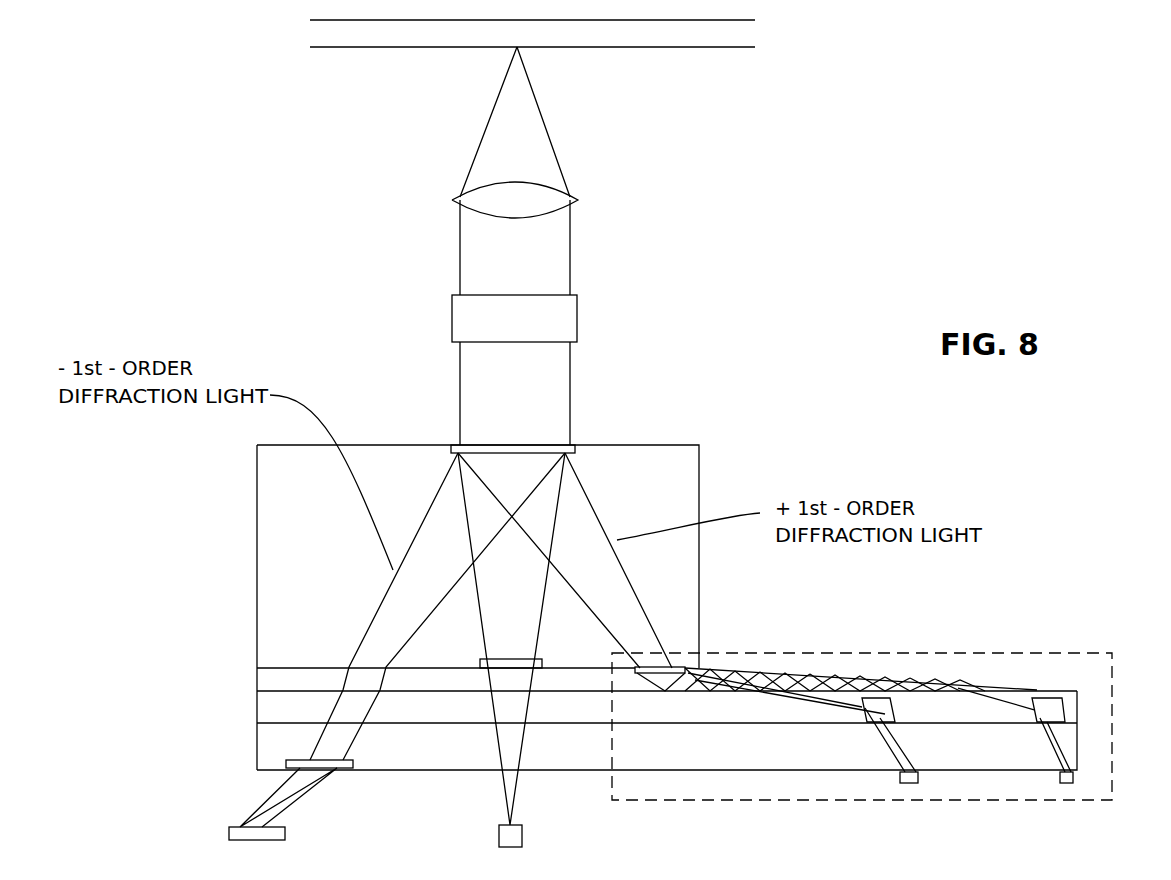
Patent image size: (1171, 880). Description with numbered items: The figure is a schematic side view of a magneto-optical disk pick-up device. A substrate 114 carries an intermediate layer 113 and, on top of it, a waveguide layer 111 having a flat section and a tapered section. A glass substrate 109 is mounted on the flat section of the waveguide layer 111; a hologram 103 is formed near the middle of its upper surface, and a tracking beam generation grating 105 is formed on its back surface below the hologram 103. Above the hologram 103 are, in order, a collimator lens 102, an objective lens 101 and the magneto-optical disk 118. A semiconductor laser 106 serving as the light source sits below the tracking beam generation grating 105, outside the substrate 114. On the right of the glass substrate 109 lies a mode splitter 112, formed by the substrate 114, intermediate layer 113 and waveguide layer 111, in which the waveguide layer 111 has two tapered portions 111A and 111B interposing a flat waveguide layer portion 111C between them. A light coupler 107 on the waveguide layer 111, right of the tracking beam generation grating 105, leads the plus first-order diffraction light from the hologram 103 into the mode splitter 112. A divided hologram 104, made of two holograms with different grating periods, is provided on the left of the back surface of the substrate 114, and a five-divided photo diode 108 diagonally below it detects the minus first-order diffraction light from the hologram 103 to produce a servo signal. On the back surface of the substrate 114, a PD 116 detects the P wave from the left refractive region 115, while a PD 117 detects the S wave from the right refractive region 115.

The magneto-optical disk 118 is at (747, 37).
The objective lens 101 is at (578, 200).
The collimator lens 102 is at (562, 325).
The hologram 103 is at (497, 443).
The glass substrate 109 is at (700, 472).
The tracking beam generation grating 105 is at (517, 658).
The light coupler 107 is at (659, 668).
The waveguide layer 111 is at (270, 680).
The intermediate layer 113 is at (277, 710).
The substrate 114 is at (277, 740).
The tapered portion 111A is at (747, 672).
The flat waveguide layer portion 111C is at (822, 675).
The tapered portion 111B is at (962, 680).
The mode splitter 112 is at (1052, 653).
The refractive region 115 is at (893, 708).
The PD 116 is at (903, 783).
The PD 117 is at (1067, 783).
The divided hologram 104 is at (352, 765).
The five-divided photo diode 108 is at (285, 833).
The semiconductor laser 106 is at (522, 835).